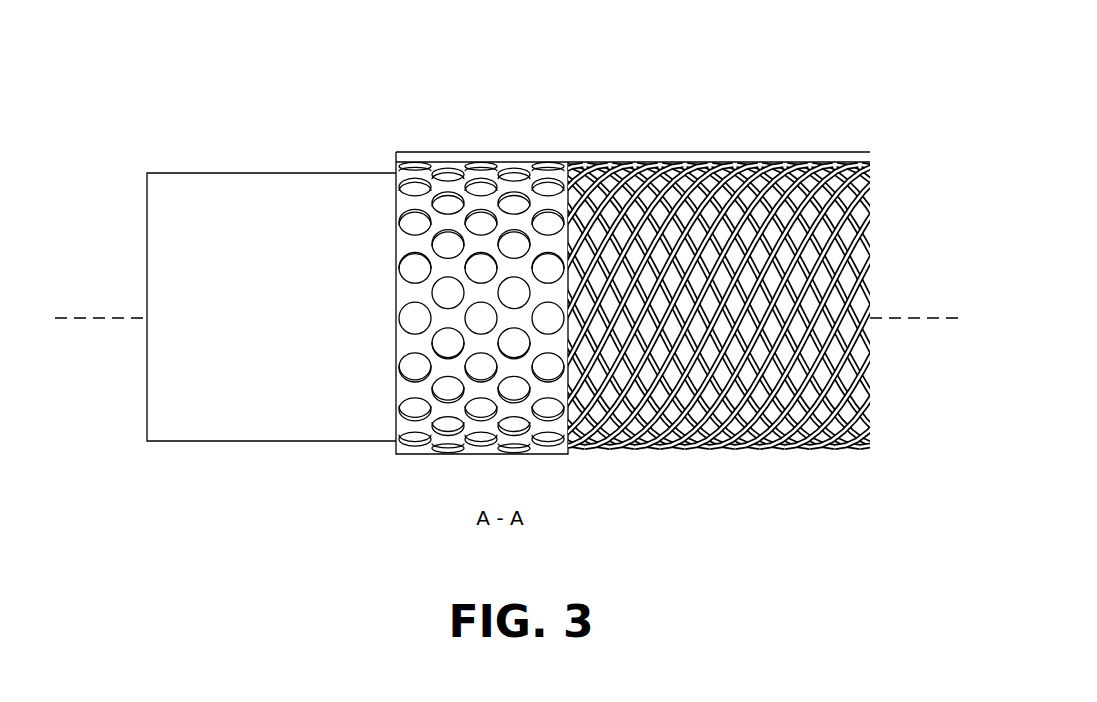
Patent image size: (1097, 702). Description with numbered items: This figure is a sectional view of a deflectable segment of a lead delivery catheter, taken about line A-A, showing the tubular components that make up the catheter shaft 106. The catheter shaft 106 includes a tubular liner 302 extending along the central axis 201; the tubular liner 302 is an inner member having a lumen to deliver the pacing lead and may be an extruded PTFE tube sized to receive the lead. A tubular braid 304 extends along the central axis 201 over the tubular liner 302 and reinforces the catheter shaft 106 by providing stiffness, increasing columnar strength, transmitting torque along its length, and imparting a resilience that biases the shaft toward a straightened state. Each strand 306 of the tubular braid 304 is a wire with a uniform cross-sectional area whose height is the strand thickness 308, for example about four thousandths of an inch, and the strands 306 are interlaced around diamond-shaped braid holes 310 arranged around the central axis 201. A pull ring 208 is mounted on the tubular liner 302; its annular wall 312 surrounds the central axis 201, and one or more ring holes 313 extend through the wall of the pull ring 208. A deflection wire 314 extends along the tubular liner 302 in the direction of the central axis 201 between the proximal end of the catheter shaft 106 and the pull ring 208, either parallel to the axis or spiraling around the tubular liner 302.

The catheter shaft 106 is at (544, 67).
The central axis 201 is at (105, 320).
The pull ring 208 is at (400, 286).
The tubular liner 302 is at (203, 183).
The tubular braid 304 is at (722, 276).
The strand 306 is at (845, 390).
The strand thickness 308 is at (810, 243).
The braid hole 310 is at (752, 403).
The annular wall 312 is at (397, 333).
The ring hole 313 is at (397, 410).
The deflection wire 314 is at (603, 156).